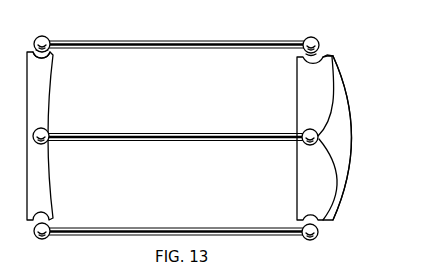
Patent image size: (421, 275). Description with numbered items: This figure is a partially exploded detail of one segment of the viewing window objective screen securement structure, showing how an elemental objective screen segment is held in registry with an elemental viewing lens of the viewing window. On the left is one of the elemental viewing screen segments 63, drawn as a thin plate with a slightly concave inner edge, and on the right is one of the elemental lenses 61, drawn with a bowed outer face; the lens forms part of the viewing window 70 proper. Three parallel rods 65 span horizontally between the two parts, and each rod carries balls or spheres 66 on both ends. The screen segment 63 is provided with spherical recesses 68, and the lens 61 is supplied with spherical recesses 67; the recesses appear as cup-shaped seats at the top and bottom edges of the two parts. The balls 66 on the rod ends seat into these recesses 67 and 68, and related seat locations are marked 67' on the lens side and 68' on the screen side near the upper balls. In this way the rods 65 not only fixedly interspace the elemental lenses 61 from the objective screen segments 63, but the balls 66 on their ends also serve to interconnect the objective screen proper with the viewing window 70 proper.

The elemental lens 61 is at (322, 80).
The elemental viewing screen segment 63 is at (44, 170).
The rod 65 is at (185, 33).
The ball 66 is at (41, 36).
The spherical recess 67 is at (342, 49).
The seat under ball 67' is at (310, 38).
The spherical recess 68 is at (60, 56).
The seat under ball 68' is at (50, 34).
The viewing window 70 is at (357, 130).